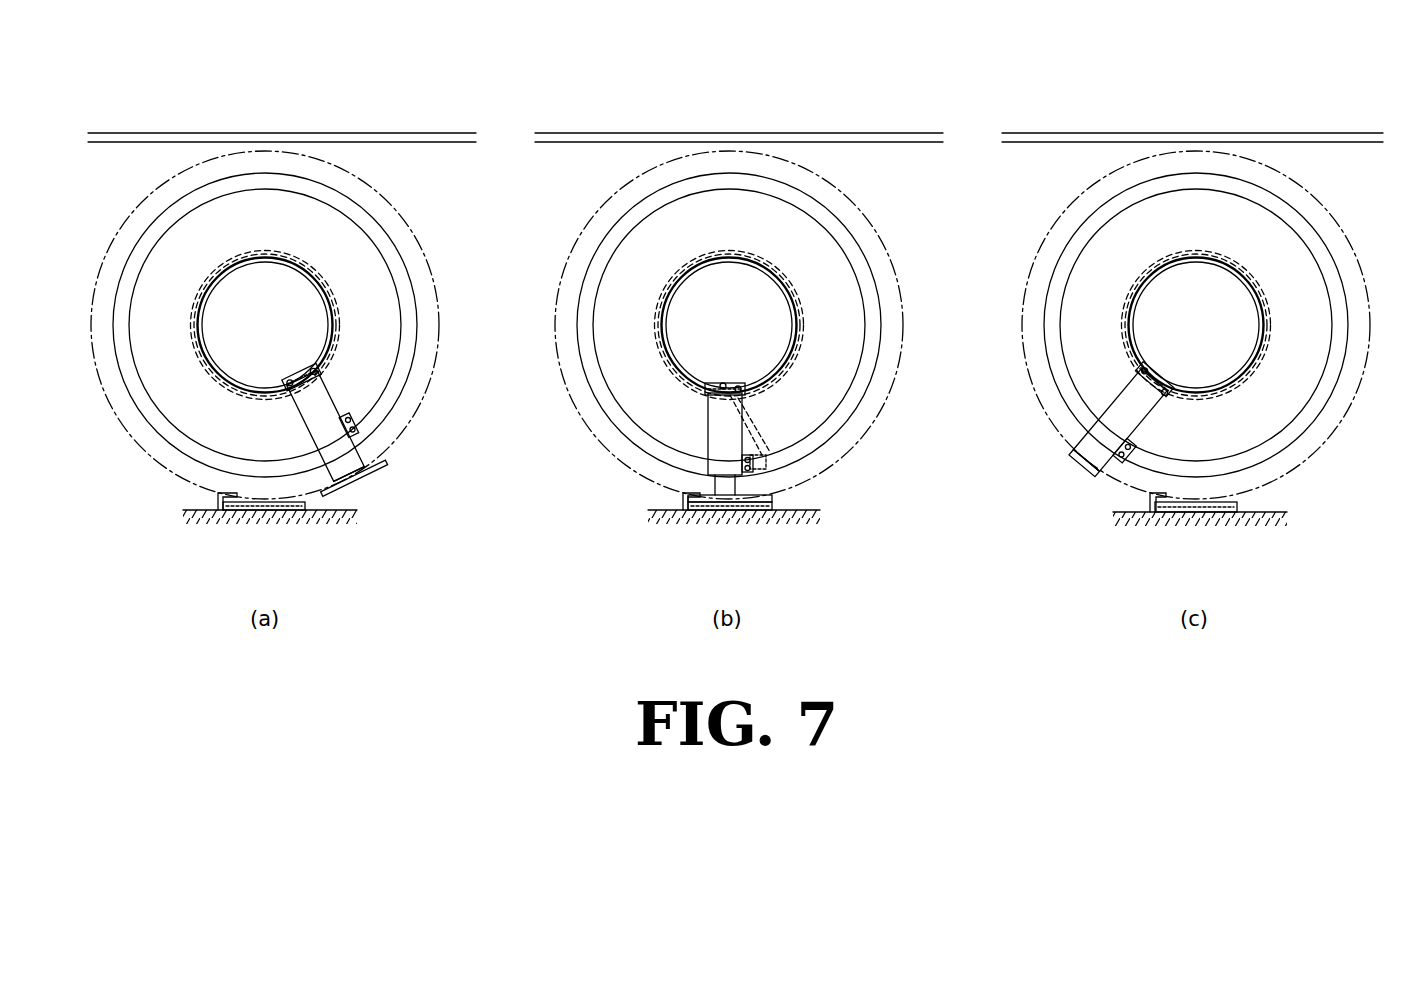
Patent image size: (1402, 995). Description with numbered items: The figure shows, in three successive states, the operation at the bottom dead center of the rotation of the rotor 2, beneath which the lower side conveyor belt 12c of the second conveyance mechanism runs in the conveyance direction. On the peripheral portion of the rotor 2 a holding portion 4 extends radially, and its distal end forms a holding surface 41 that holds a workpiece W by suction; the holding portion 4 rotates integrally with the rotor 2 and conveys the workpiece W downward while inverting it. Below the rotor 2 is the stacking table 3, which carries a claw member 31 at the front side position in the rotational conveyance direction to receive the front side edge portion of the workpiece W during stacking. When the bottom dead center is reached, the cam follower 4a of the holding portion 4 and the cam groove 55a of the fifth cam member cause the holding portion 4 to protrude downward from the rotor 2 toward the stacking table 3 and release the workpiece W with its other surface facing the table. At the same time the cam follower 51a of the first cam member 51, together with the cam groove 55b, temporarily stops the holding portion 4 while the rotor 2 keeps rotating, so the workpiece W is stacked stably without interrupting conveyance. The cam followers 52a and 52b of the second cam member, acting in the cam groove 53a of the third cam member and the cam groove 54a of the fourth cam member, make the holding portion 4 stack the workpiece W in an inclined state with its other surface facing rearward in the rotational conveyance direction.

The conveyor belt 12c is at (108, 133).
The rotor 2 is at (405, 222).
The stacking table 3 is at (185, 506).
The claw member 31 is at (219, 504).
The holding portion 4 is at (326, 472).
The cam follower 4a is at (298, 372).
The holding surface 41 is at (352, 472).
The first cam member 51 is at (366, 466).
The cam follower 51a is at (364, 430).
The cam follower 52a is at (316, 376).
The cam follower 52b is at (291, 386).
The cam groove 53a is at (335, 302).
The cam groove 54a is at (338, 314).
The cam groove 55a is at (328, 290).
The cam groove 55b is at (400, 262).
The workpiece W is at (388, 453).